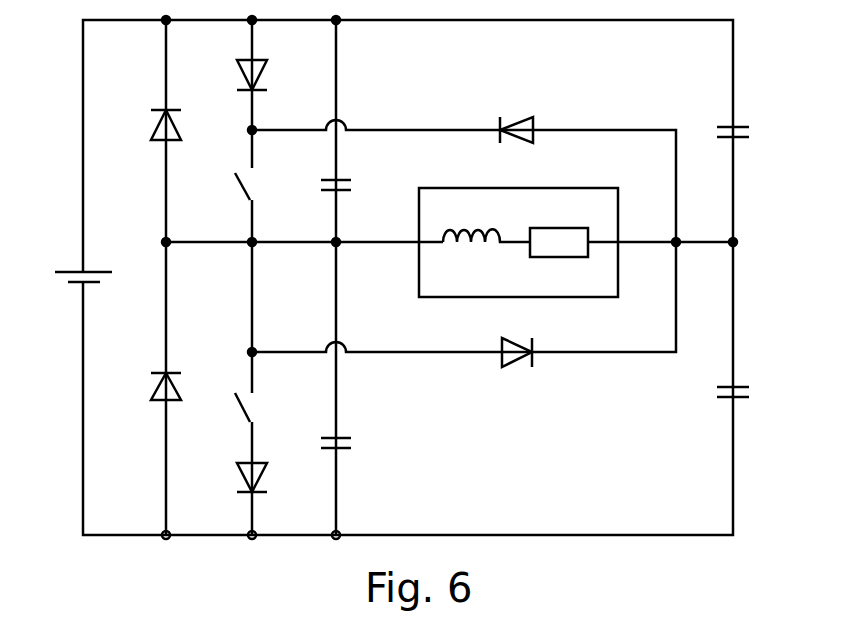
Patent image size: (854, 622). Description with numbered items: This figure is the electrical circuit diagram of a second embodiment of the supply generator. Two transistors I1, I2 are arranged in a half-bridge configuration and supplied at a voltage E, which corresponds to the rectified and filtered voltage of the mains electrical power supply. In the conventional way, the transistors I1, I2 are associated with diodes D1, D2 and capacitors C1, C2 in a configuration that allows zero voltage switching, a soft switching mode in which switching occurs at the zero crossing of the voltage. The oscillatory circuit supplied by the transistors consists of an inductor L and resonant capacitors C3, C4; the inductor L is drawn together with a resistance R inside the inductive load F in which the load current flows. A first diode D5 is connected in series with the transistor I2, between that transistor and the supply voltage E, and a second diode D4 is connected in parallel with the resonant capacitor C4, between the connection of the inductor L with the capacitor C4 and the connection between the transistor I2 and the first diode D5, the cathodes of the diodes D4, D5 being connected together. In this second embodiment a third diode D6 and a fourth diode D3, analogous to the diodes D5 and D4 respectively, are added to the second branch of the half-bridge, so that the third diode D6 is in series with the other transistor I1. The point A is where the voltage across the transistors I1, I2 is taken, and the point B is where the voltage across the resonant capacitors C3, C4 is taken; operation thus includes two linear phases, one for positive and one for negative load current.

The supply voltage E is at (70, 280).
The diode D1 is at (184, 391).
The diode D2 is at (183, 129).
The fourth diode D3 is at (516, 373).
The second diode D4 is at (516, 113).
The first diode D5 is at (269, 79).
The third diode D6 is at (269, 483).
The transistor I1 is at (259, 412).
The transistor I2 is at (261, 189).
The capacitor C1 is at (353, 448).
The capacitor C2 is at (354, 190).
The resonant capacitor C3 is at (749, 395).
The resonant capacitor C4 is at (749, 137).
The inductor L is at (486, 219).
The resistor R is at (559, 226).
The inductive load F is at (419, 278).
The point A is at (154, 240).
The point B is at (745, 242).